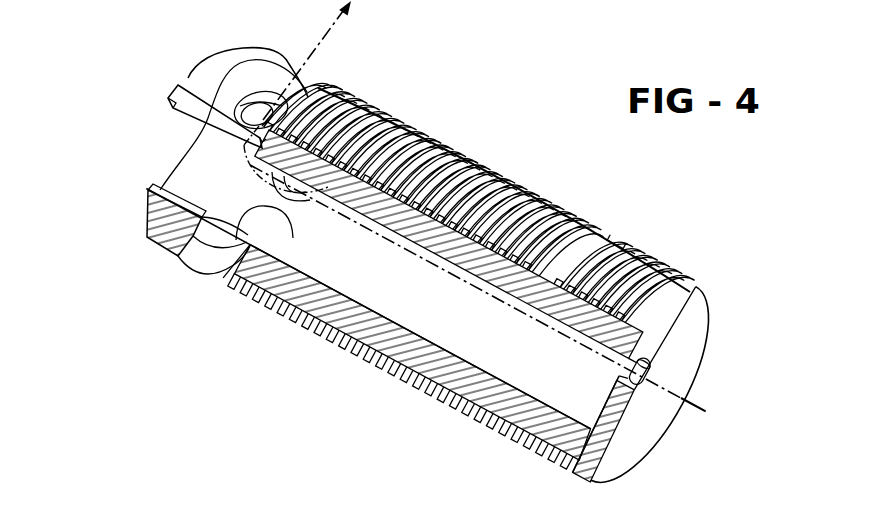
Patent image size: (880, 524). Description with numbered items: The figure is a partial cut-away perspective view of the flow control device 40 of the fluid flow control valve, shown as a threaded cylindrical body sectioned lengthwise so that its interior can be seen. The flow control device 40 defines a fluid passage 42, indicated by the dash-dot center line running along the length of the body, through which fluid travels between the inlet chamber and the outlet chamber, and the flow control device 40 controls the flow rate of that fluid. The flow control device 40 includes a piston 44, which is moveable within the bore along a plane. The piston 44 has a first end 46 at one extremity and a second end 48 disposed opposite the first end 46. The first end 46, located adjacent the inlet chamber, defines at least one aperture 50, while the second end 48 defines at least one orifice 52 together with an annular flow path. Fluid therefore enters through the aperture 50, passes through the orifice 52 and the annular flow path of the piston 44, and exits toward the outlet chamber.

The flow control device 40 is at (505, 104).
The fluid passage 42 is at (657, 383).
The piston 44 is at (372, 105).
The first end 46 is at (680, 310).
The second end 48 is at (172, 98).
The aperture 50 is at (645, 371).
The orifice 52 is at (266, 100).